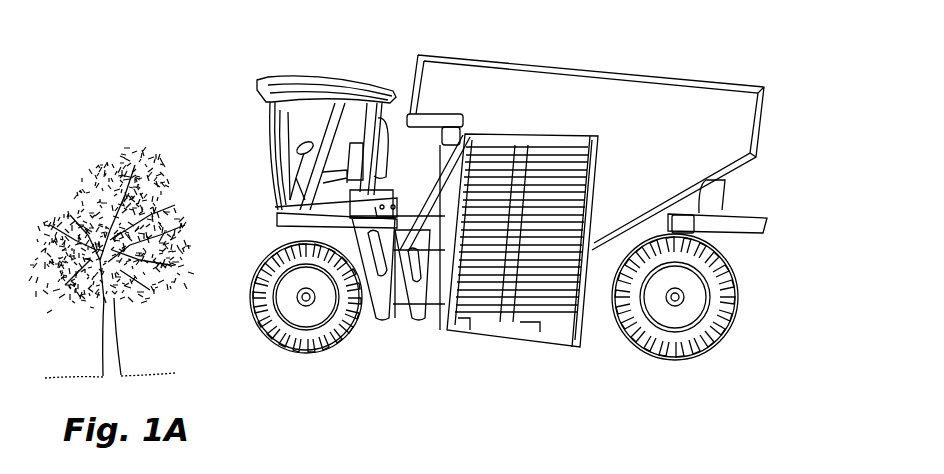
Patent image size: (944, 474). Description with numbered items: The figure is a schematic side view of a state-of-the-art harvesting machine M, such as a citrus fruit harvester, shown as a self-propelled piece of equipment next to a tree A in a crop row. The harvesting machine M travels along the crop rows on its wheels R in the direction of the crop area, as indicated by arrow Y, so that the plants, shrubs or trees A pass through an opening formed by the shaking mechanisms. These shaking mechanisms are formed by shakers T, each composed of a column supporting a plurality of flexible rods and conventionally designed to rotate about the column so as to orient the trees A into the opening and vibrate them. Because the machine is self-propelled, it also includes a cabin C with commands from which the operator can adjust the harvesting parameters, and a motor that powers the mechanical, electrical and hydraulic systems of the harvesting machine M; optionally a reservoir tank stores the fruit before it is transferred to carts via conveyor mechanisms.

The trees A is at (99, 160).
The harvesting machine M is at (247, 104).
The cabin C is at (296, 92).
The shakers T is at (493, 343).
The wheels R is at (305, 306).
The arrow Y is at (323, 407).